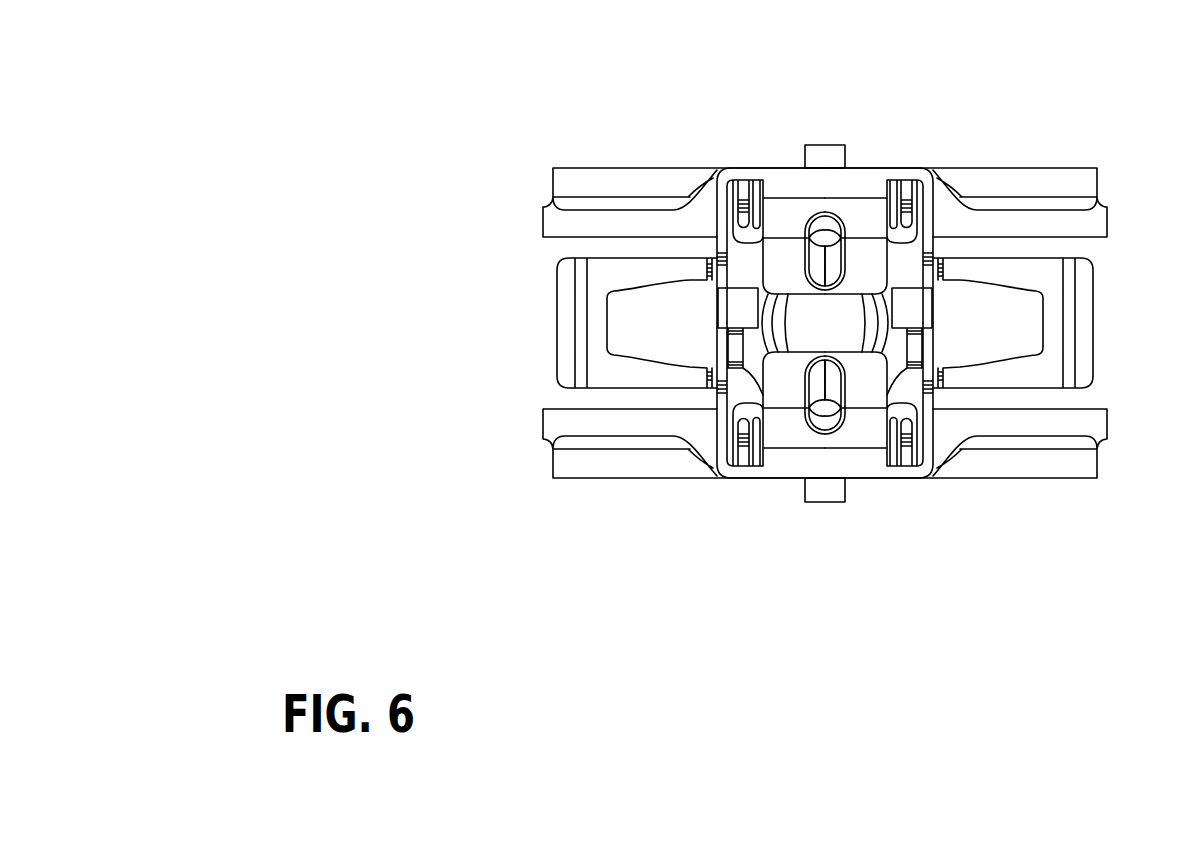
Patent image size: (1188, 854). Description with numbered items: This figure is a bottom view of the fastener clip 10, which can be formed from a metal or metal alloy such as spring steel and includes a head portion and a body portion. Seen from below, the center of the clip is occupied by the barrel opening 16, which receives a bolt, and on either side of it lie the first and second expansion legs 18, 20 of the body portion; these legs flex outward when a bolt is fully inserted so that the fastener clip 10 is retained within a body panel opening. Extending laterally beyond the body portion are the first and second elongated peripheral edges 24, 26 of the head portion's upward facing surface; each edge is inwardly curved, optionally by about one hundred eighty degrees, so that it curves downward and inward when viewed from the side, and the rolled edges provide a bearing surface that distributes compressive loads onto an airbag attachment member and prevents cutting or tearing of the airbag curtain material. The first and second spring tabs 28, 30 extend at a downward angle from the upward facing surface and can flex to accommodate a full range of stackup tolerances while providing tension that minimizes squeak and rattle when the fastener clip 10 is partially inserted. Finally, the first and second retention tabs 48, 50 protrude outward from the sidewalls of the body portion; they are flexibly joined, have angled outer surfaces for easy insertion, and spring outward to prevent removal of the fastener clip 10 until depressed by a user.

The fastener clip 10 is at (668, 103).
The barrel opening 16 is at (788, 332).
The first expansion leg 18 is at (860, 182).
The second expansion leg 20 is at (863, 468).
The first elongated peripheral edge 24 is at (1007, 168).
The second elongated peripheral edge 26 is at (1007, 478).
The first spring tab 28 is at (558, 312).
The second spring tab 30 is at (1090, 318).
The first retention tab 48 is at (820, 145).
The second retention tab 50 is at (827, 502).